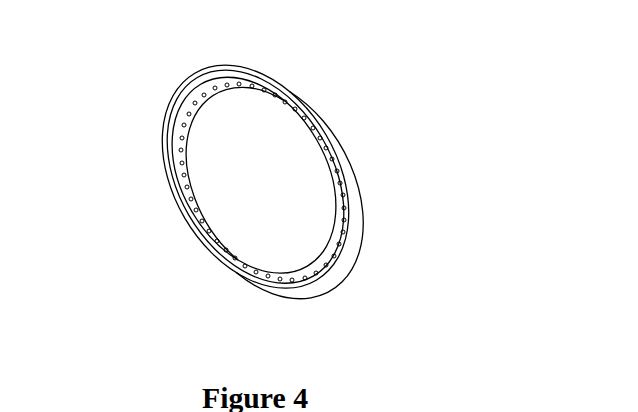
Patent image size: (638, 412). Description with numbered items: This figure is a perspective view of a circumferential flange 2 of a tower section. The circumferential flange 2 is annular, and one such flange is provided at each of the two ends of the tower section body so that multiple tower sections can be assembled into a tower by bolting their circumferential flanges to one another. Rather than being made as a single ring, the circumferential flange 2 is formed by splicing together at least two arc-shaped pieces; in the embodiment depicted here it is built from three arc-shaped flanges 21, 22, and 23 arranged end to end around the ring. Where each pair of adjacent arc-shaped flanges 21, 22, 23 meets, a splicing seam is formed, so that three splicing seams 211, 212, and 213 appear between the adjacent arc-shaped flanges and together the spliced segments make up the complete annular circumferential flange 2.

The circumferential flange 2 is at (276, 183).
The arc-shaped flange 21 is at (175, 157).
The splicing seam 211 is at (213, 68).
The splicing seam 212 is at (193, 173).
The splicing seam 213 is at (350, 240).
The arc-shaped flange 22 is at (340, 162).
The arc-shaped flange 23 is at (293, 287).